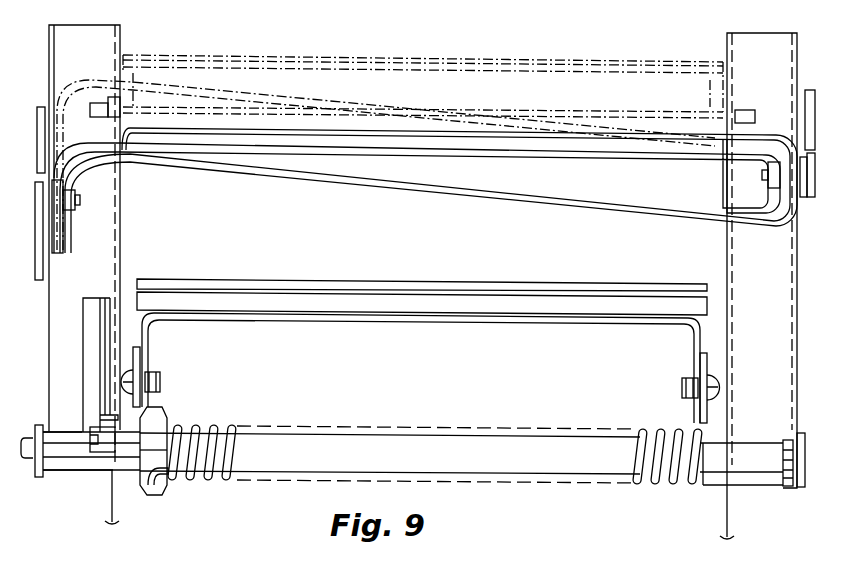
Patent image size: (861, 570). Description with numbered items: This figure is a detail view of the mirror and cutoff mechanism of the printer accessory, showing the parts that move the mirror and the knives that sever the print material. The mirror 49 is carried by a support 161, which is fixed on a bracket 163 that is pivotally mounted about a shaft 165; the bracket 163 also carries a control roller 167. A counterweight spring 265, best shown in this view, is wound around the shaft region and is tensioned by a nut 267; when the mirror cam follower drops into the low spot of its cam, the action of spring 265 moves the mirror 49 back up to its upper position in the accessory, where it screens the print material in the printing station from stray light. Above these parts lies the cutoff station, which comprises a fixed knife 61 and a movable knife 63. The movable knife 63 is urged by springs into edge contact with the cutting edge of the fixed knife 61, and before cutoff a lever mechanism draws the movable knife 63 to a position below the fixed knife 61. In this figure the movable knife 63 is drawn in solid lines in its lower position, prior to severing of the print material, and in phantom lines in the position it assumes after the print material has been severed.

The mirror 49 is at (185, 282).
The fixed knife 61 is at (497, 150).
The movable knife 63 is at (519, 197).
The support 161 is at (293, 300).
The bracket 163 is at (138, 362).
The shaft 165 is at (30, 463).
The control roller 167 is at (107, 452).
The counterweight spring 265 is at (205, 478).
The nut 267 is at (152, 494).